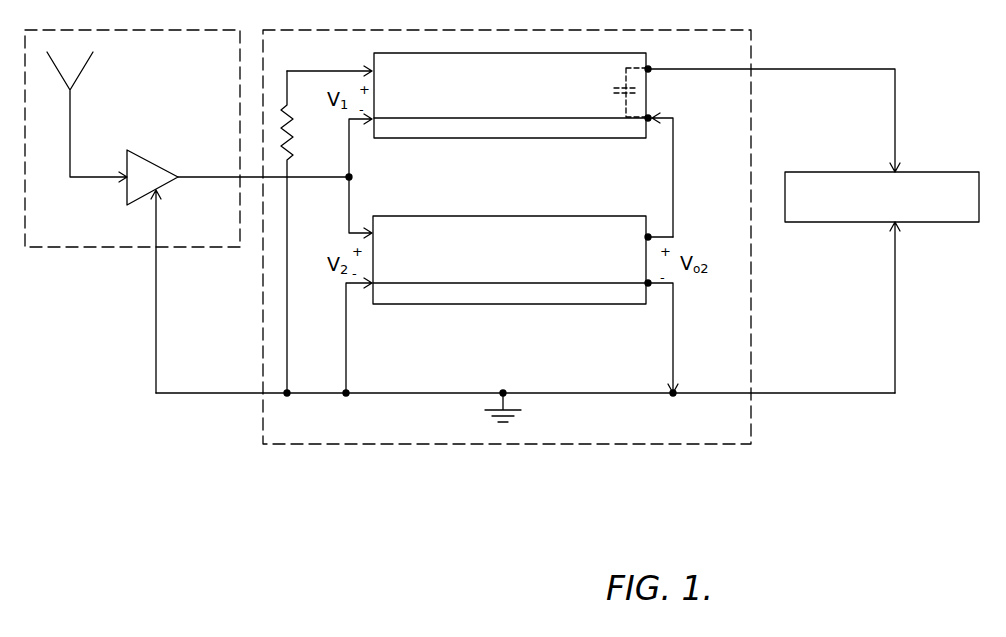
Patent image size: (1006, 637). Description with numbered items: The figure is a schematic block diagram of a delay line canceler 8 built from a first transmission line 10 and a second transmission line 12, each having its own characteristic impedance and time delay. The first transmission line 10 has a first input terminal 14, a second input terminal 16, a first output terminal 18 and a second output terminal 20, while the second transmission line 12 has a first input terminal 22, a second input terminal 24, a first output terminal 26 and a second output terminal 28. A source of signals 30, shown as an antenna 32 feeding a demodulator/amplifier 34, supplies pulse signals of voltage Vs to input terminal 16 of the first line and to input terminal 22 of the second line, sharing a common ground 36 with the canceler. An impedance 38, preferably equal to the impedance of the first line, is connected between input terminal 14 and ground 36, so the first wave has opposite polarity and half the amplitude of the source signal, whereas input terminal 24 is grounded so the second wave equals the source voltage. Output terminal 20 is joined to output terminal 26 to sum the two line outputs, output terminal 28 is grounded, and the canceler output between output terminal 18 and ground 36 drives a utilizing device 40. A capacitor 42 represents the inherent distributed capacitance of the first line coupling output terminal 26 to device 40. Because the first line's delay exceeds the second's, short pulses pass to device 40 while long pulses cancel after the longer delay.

The delay line canceler 8 is at (322, 446).
The first transmission line 10 is at (463, 139).
The second transmission line 12 is at (463, 216).
The first input terminal 14 is at (372, 66).
The second input terminal 16 is at (371, 121).
The first output terminal 18 is at (652, 66).
The second output terminal 20 is at (650, 120).
The first input terminal 22 is at (371, 231).
The second input terminal 24 is at (371, 285).
The first output terminal 26 is at (651, 235).
The second output terminal 28 is at (650, 285).
The source of signals 30 is at (27, 248).
The antenna 32 is at (87, 65).
The demodulator/amplifier 34 is at (143, 158).
The common ground 36 is at (502, 391).
The impedance 38 is at (293, 132).
The device for utilizing the output 40 is at (932, 222).
The capacitor 42 is at (626, 55).